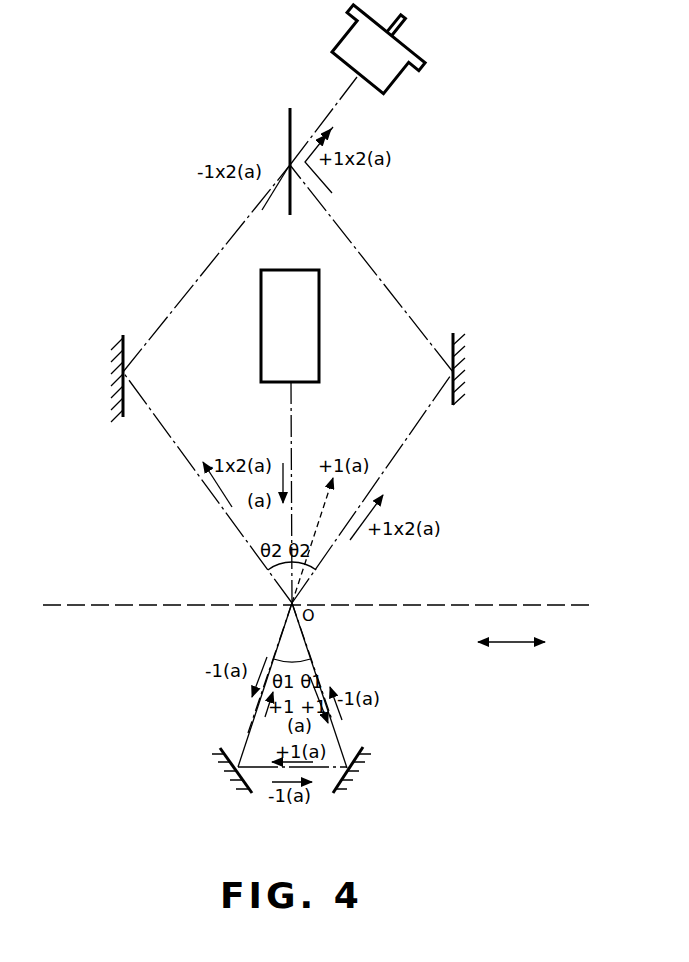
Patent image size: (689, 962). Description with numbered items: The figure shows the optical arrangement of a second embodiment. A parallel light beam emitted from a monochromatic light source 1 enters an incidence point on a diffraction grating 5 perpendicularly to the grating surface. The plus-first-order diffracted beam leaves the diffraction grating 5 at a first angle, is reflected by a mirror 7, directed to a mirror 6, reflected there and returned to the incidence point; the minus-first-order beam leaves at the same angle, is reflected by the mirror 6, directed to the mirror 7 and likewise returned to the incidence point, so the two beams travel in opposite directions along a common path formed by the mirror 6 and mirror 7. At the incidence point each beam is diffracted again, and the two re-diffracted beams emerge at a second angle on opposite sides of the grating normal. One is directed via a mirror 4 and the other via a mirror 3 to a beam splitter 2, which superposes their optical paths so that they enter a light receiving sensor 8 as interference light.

The monochromatic light source 1 is at (320, 345).
The beam splitter 2 is at (293, 193).
The mirror 3 is at (112, 372).
The mirror 4 is at (466, 372).
The diffraction grating 5 is at (557, 603).
The mirror 6 is at (228, 772).
The mirror 7 is at (357, 772).
The light receiving sensor 8 is at (405, 76).